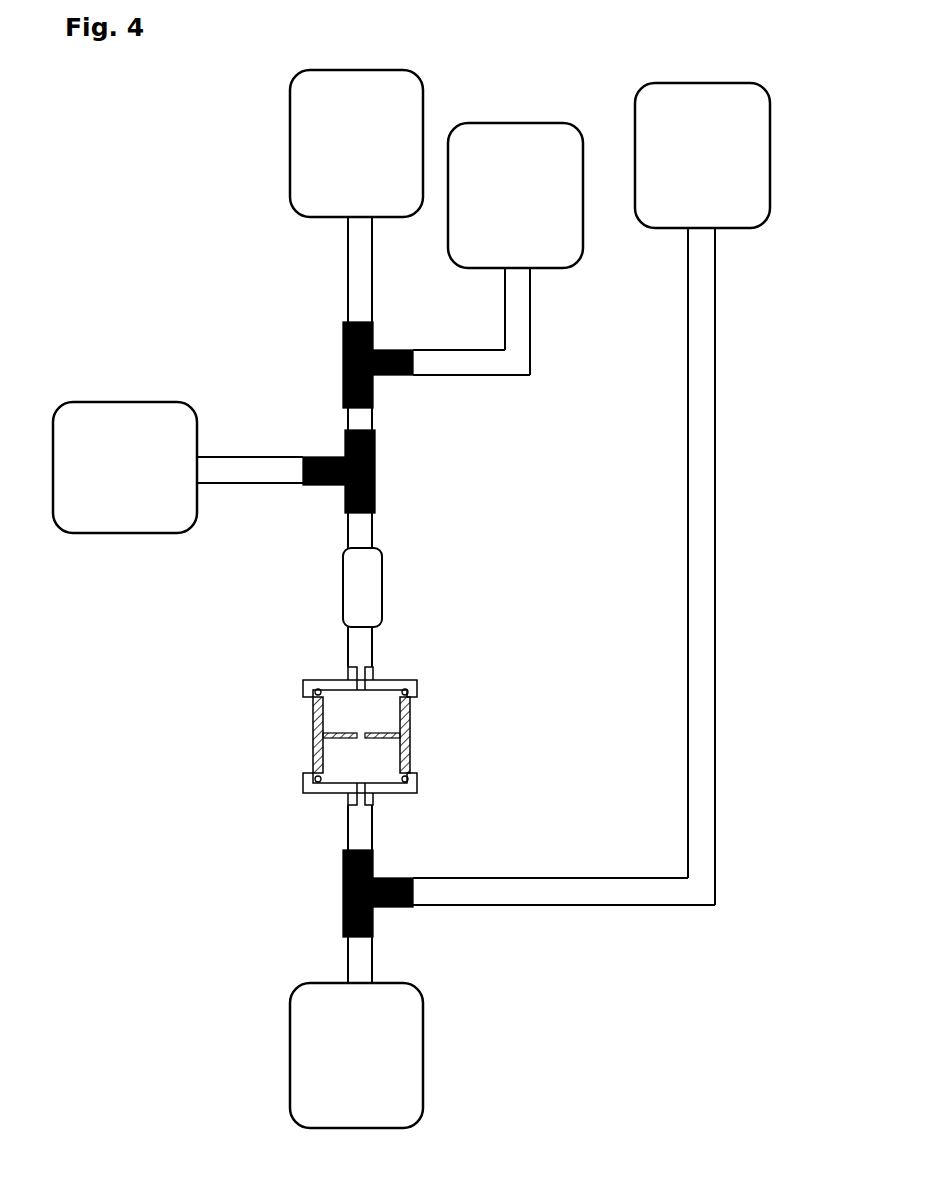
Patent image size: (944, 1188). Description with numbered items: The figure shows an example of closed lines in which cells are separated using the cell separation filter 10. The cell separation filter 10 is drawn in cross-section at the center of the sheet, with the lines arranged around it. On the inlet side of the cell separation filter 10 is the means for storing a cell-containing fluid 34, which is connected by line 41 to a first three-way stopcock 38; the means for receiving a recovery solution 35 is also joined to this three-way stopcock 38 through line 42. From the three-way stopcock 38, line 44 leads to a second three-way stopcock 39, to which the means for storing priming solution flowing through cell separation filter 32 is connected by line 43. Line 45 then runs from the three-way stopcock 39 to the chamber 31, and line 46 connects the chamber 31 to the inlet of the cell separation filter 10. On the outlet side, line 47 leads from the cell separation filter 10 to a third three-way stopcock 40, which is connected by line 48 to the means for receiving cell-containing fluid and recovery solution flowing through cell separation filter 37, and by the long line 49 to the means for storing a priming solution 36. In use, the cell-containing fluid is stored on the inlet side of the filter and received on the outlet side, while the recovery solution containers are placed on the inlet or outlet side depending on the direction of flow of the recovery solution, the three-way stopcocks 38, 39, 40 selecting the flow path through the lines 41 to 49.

The cell separation filter 10 is at (319, 736).
The chamber 31 is at (326, 587).
The means for storing priming solution flowing through cell separation filter 32 is at (125, 441).
The means for storing a cell-containing fluid 34 is at (308, 143).
The means for receiving a recovery solution 35 is at (515, 169).
The means for storing a priming solution 36 is at (736, 155).
The means for receiving cell-containing fluid and recovery solution flowing through 37 is at (327, 1055).
The three-way stopcock 38 is at (341, 365).
The three-way stopcock 39 is at (372, 471).
The three-way stopcock 40 is at (341, 893).
The line 41 is at (343, 270).
The line 42 is at (542, 363).
The line 43 is at (250, 495).
The line 44 is at (385, 415).
The line 45 is at (385, 533).
The line 46 is at (385, 640).
The line 47 is at (383, 825).
The line 48 is at (330, 957).
The line 49 is at (608, 906).